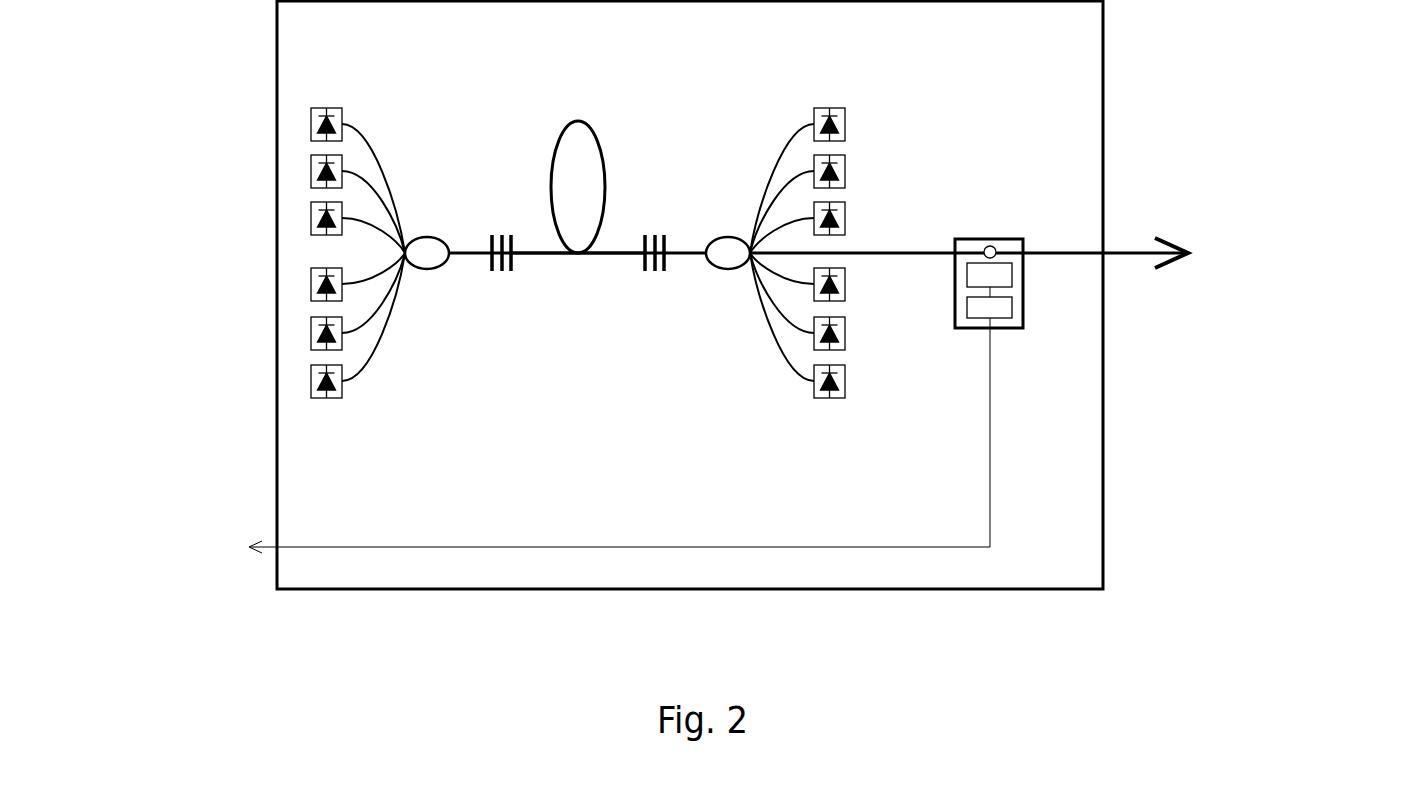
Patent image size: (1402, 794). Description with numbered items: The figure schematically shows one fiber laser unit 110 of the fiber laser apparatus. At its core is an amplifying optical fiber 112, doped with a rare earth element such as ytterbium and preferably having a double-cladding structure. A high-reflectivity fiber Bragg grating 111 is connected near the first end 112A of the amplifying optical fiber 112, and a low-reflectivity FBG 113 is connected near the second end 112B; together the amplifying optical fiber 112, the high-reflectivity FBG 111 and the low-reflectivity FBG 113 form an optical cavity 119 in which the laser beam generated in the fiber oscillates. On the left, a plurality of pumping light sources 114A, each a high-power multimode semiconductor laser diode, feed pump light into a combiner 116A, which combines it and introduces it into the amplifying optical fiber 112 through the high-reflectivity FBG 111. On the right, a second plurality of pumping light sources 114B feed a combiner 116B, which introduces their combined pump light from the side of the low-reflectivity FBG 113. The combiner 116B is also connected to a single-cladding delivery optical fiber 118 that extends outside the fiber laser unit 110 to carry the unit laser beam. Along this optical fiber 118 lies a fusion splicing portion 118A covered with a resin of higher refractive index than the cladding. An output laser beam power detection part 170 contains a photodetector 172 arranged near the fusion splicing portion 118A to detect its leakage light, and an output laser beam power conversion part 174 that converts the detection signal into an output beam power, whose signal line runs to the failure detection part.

The fiber laser unit 110 is at (1104, 42).
The high-reflectivity fiber Bragg grating 111 is at (502, 284).
The amplifying optical fiber 112 is at (562, 128).
The first end 112A is at (455, 250).
The second end 112B is at (707, 250).
The low-reflectivity fiber Bragg grating 113 is at (654, 284).
The pumping light sources 114A is at (330, 107).
The pumping light sources 114B is at (830, 107).
The combiner 116A is at (432, 270).
The combiner 116B is at (720, 270).
The optical fiber 118 is at (887, 250).
The fusion splicing portion 118A is at (998, 247).
The optical cavity 119 is at (677, 358).
The output laser beam power detection part 170 is at (972, 239).
The photodetector 172 is at (1013, 275).
The output laser beam power conversion part 174 is at (1013, 305).